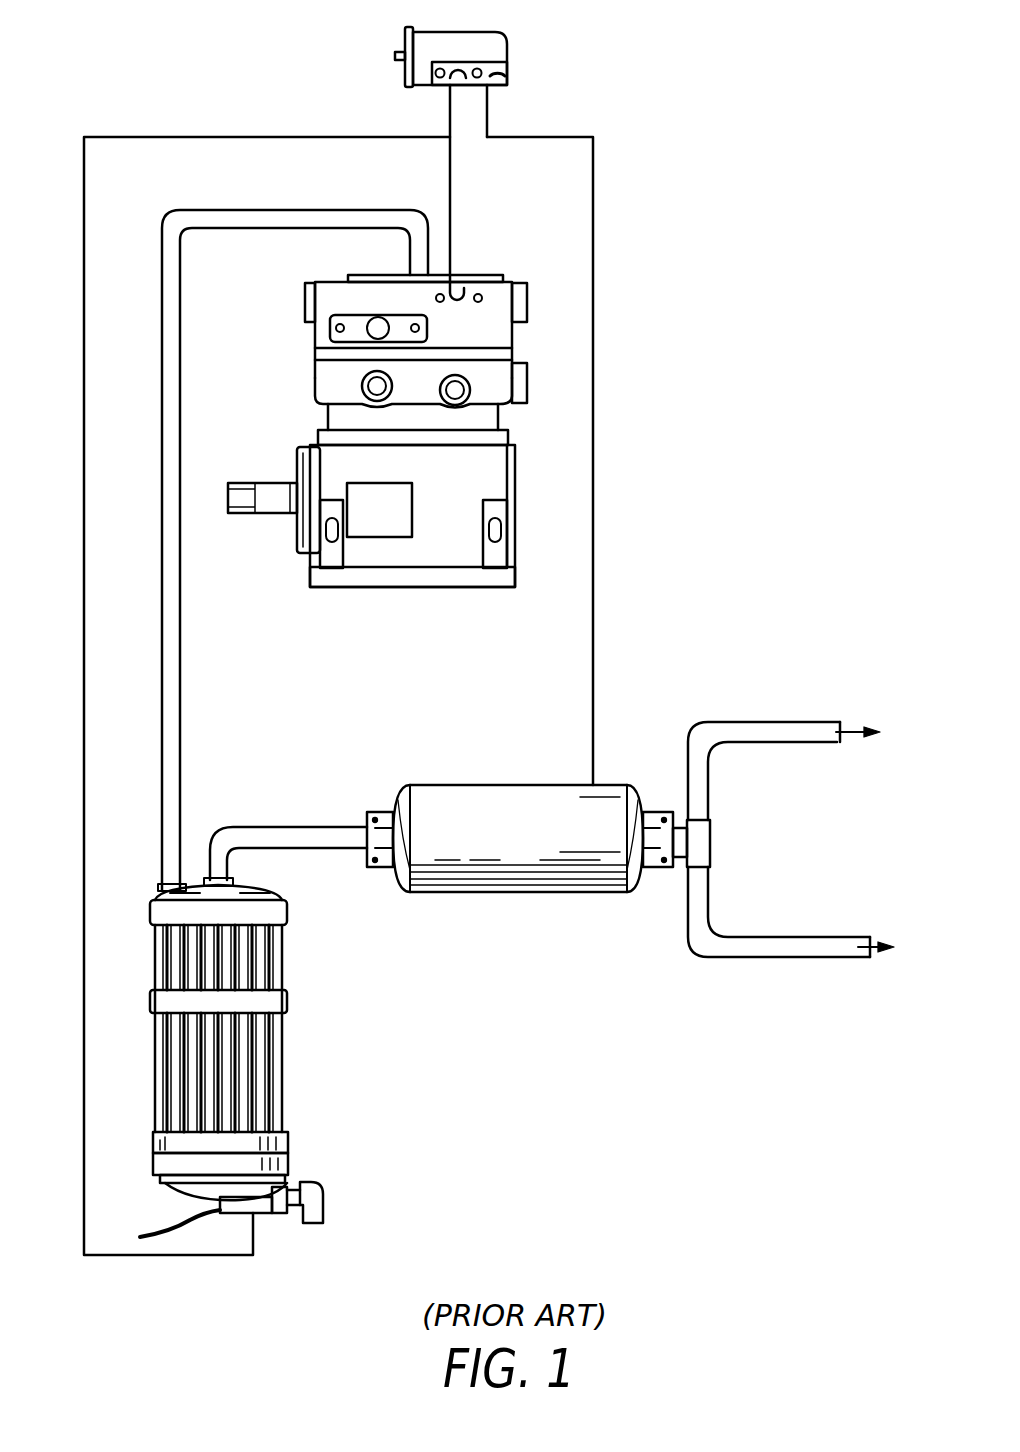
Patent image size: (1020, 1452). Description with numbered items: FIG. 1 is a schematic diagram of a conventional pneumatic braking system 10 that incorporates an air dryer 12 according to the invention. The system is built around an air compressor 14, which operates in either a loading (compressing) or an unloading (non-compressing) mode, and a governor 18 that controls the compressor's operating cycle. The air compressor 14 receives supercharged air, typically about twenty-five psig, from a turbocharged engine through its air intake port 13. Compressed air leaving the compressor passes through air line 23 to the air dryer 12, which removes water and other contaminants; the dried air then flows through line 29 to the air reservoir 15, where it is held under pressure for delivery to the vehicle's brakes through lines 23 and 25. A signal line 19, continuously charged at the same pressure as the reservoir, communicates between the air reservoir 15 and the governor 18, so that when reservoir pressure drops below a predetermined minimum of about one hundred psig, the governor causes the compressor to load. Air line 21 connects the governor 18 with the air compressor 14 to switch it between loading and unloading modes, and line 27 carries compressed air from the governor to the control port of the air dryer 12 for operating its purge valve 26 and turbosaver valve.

The braking system 10 is at (728, 272).
The air dryer 12 is at (318, 1076).
The air intake port 13 is at (378, 328).
The air compressor 14 is at (430, 600).
The air reservoir 15 is at (525, 850).
The governor 18 is at (503, 40).
The signal line 19 is at (598, 520).
The air line 21 is at (455, 172).
The air line 23 is at (180, 268).
The line 25 is at (770, 960).
The purge valve 26 is at (325, 1198).
The line 27 is at (85, 608).
The line 29 is at (265, 826).